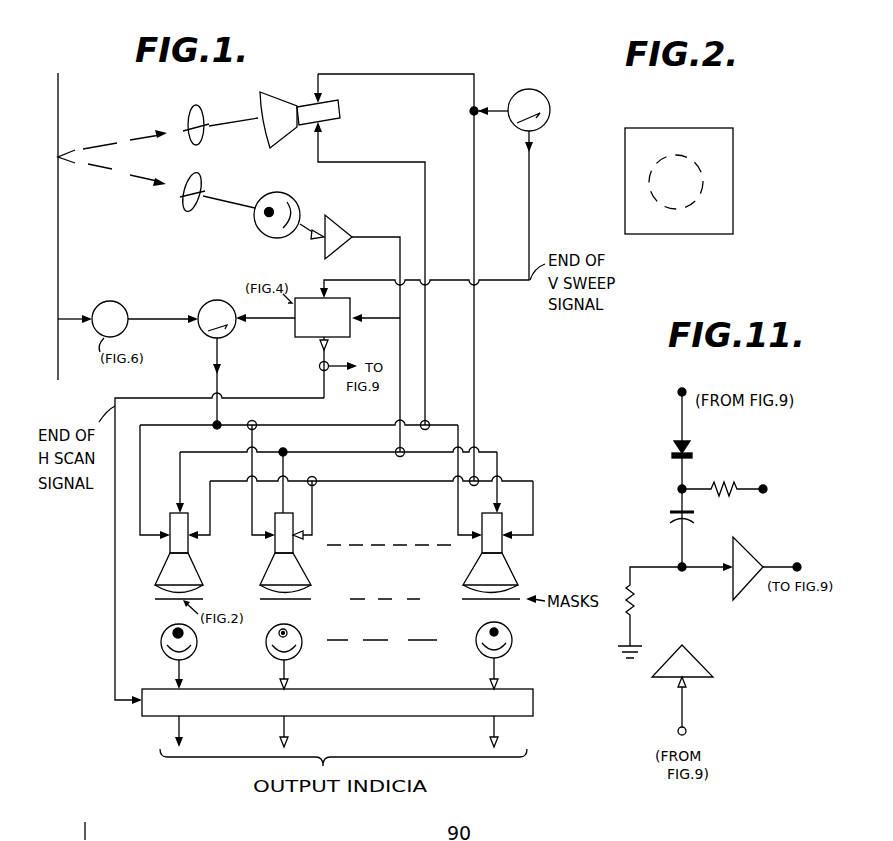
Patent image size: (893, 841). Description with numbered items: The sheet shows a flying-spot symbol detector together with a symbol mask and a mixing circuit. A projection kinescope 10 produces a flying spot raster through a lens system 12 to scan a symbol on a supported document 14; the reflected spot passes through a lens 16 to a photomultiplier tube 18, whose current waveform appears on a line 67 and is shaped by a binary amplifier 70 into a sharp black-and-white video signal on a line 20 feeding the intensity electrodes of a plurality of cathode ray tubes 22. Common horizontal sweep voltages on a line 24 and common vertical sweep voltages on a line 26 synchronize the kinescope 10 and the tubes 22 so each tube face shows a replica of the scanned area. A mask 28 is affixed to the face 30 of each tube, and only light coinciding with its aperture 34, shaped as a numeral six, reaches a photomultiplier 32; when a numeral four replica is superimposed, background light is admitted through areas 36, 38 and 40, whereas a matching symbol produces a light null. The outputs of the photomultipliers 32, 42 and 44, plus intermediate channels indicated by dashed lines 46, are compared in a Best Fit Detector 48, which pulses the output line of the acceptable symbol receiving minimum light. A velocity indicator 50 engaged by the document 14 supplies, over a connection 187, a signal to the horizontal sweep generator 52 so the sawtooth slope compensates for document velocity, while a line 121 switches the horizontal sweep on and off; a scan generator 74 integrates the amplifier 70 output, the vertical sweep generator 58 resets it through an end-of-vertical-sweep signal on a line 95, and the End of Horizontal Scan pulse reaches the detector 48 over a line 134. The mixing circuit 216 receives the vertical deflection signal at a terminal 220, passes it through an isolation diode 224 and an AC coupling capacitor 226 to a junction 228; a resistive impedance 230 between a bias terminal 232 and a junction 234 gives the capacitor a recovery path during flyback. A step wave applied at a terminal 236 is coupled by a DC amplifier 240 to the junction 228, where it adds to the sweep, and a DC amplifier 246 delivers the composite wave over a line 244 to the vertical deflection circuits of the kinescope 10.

In FIG. 1, the projection kinescope 10 is at (271, 99).
In FIG. 1, the lens system 12 is at (197, 105).
In FIG. 1, the document 14 is at (58, 118).
In FIG. 1, the lens 16 is at (200, 181).
In FIG. 1, the photomultiplier tube 18 is at (283, 200).
In FIG. 1, the line 20 is at (376, 237).
In FIG. 1, the cathode ray tubes 22 is at (263, 572).
In FIG. 1, the line 24 is at (364, 425).
In FIG. 1, the line 26 is at (385, 483).
In FIG. 1, the symbol mask 28 is at (165, 602).
In FIG. 2, the symbol mask 28 is at (679, 181).
In FIG. 1, the face of CRT 30 is at (165, 589).
In FIG. 2, the face of CRT 30 is at (702, 177).
In FIG. 1, the photomultiplier 32 is at (162, 647).
In FIG. 2, the aperture 34 is at (672, 192).
In FIG. 2, the area 36 is at (666, 190).
In FIG. 2, the area 38 is at (675, 162).
In FIG. 2, the area 40 is at (690, 186).
In FIG. 1, the photomultiplier 42 is at (267, 647).
In FIG. 1, the photomultiplier 44 is at (477, 637).
In FIG. 1, the dashed lines 46 is at (393, 627).
In FIG. 1, the Best Fit Detector 48 is at (535, 702).
In FIG. 1, the velocity indicator 50 is at (113, 301).
In FIG. 1, the horizontal sweep generator 52 is at (215, 300).
In FIG. 1, the vertical sweep generator 58 is at (545, 97).
In FIG. 1, the line 67 is at (305, 240).
In FIG. 1, the binary amplifier 70 is at (335, 216).
In FIG. 1, the scan generator 74 is at (352, 306).
In FIG. 1, the line 95 is at (530, 204).
In FIG. 1, the line 121 is at (273, 321).
In FIG. 1, the line 134 is at (282, 398).
In FIG. 1, the velocity signal line 187 is at (156, 316).
In FIG. 11, the mixing circuit 216 is at (626, 463).
In FIG. 11, the terminal 220 is at (677, 396).
In FIG. 11, the isolation diode 224 is at (692, 451).
In FIG. 11, the AC coupling capacitor 226 is at (669, 515).
In FIG. 11, the junction 228 is at (679, 564).
In FIG. 11, the resistive impedance 230 is at (718, 487).
In FIG. 11, the terminal 232 is at (762, 494).
In FIG. 11, the junction 234 is at (677, 489).
In FIG. 11, the terminal 236 is at (678, 731).
In FIG. 11, the DC amplifier 240 is at (698, 655).
In FIG. 11, the line 244 is at (800, 565).
In FIG. 11, the DC amplifier 246 is at (748, 551).